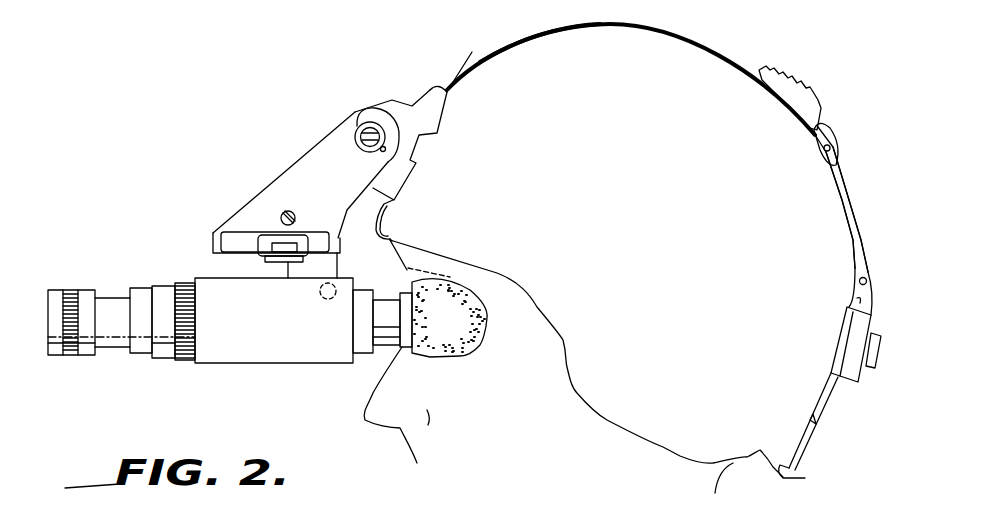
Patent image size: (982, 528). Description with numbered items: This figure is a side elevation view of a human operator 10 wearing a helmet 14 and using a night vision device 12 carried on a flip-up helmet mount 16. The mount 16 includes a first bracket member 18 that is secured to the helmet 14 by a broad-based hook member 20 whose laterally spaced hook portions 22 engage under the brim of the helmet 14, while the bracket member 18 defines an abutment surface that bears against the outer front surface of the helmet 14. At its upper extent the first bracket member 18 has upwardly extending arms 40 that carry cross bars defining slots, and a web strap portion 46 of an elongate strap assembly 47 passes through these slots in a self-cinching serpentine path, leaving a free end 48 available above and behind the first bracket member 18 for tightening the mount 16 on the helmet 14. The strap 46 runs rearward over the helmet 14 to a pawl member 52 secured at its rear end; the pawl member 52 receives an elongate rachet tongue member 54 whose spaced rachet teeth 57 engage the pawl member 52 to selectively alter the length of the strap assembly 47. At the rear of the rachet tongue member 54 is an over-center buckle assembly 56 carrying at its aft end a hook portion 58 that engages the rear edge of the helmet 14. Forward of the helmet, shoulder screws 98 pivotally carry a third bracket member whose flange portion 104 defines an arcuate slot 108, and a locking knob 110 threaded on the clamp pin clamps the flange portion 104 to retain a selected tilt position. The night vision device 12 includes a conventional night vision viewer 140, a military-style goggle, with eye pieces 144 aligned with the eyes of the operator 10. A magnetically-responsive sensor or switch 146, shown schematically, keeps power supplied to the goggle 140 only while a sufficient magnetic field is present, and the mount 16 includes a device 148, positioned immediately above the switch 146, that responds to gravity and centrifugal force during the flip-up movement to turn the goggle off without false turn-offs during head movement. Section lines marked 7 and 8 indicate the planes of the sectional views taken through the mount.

The human operator 10 is at (392, 435).
The night vision device 12 is at (286, 330).
The helmet 14 is at (657, 137).
The flip-up helmet mount 16 is at (301, 204).
The first bracket member 18 is at (419, 143).
The hook member 20 is at (390, 212).
The hook portions 22 is at (398, 235).
The upwardly extending arms 40 is at (442, 97).
The web strap portion 46 is at (521, 47).
The elongate strap assembly 47 is at (828, 160).
The free end 48 is at (472, 52).
The pawl member 52 is at (832, 137).
The rachet tongue member 54 is at (849, 190).
The over-center buckle assembly 56 is at (870, 315).
The rachet teeth 57 is at (788, 87).
The hook portion 58 is at (790, 477).
The shoulder screws 98 is at (291, 211).
The flange portion 104 is at (252, 210).
The arcuate slot 108 is at (365, 122).
The locking knob 110 is at (345, 125).
The night vision viewer 140 is at (84, 288).
The eye pieces 144 is at (472, 343).
The magnetically-responsive sensor or switch 146 is at (323, 300).
The device 148 is at (296, 281).
The section line 7- 7 is at (430, 72).
The section line 8- 8 is at (190, 240).